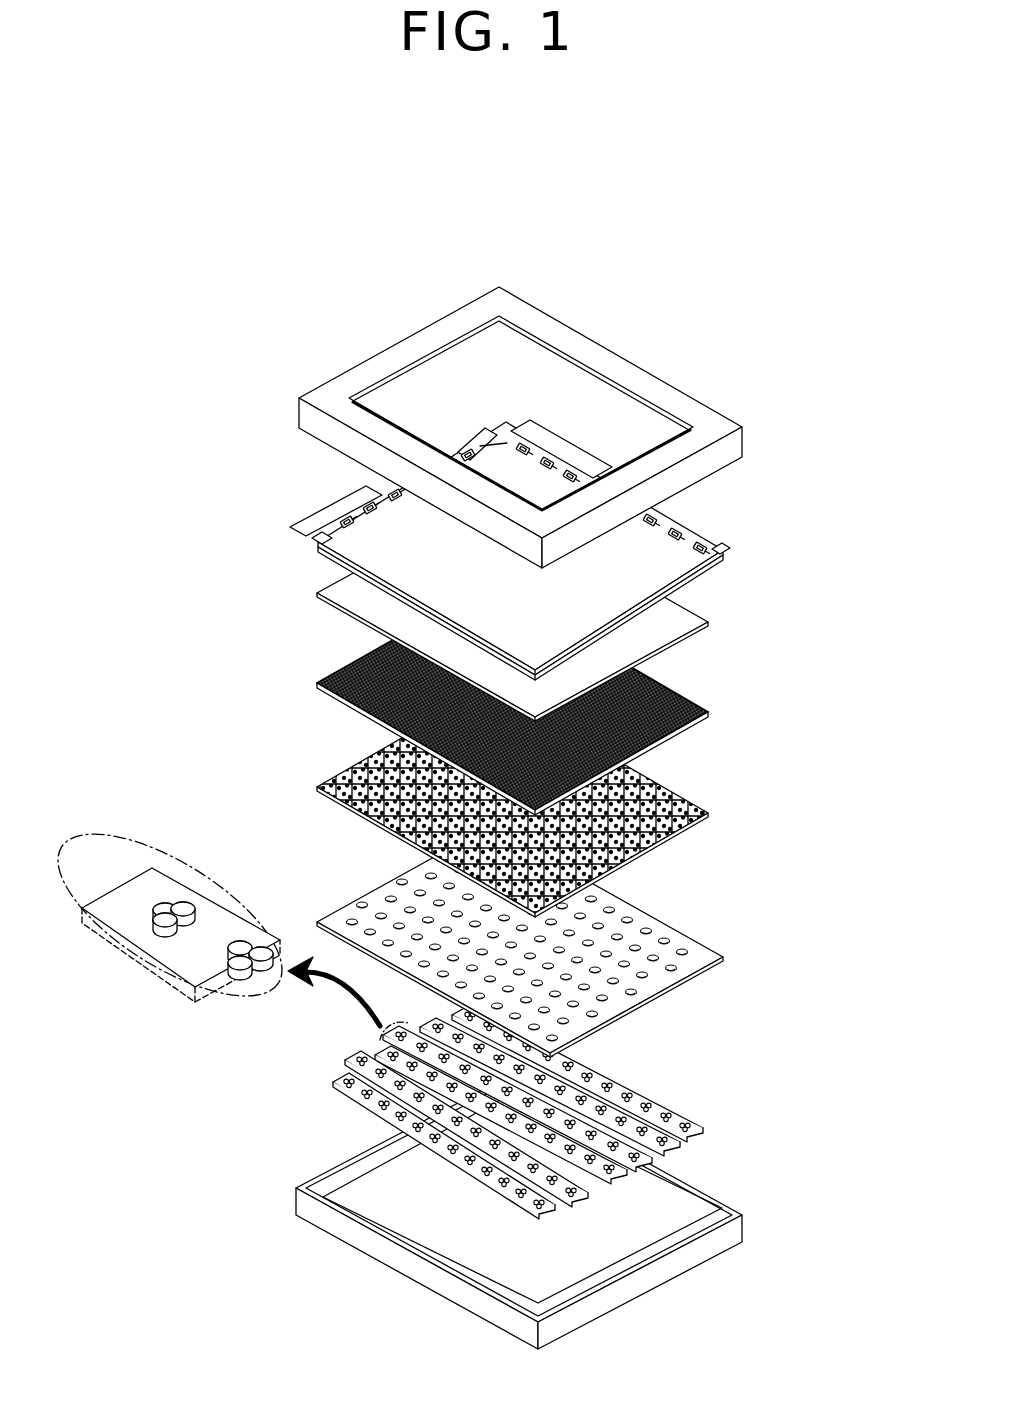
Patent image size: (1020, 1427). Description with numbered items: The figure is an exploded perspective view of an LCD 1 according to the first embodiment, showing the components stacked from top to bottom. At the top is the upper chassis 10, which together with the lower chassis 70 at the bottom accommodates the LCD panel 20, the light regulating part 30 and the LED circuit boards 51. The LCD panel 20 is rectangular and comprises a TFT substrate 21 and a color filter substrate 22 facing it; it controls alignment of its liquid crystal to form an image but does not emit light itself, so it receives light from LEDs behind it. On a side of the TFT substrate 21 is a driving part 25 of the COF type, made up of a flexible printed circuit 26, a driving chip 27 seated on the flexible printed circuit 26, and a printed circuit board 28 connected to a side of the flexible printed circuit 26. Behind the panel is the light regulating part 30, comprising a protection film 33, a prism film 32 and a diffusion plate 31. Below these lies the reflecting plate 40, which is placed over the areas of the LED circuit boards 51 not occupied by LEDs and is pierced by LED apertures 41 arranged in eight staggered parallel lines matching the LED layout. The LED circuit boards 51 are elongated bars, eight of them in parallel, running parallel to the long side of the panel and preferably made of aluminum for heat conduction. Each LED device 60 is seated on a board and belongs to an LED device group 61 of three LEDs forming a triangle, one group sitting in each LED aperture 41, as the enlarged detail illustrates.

The LCD 1 is at (226, 306).
The upper chassis 10 is at (744, 437).
The LCD panel 20 is at (583, 551).
The TFT substrate 21 is at (558, 613).
The color filter substrate 22 is at (712, 546).
The driving part 25 is at (445, 496).
The flexible printed circuit 26 is at (273, 552).
The driving chip 27 is at (336, 524).
The printed circuit board 28 is at (330, 505).
The light regulating part 30 is at (582, 707).
The diffusion plate 31 is at (712, 813).
The prism film 32 is at (710, 712).
The protection film 33 is at (557, 609).
The reflecting plate 40 is at (725, 957).
The LED aperture 41 is at (655, 912).
The LED circuit board 51 is at (707, 1128).
The LED device 60 is at (242, 940).
The LED device group 61 is at (147, 927).
The lower chassis 70 is at (744, 1217).